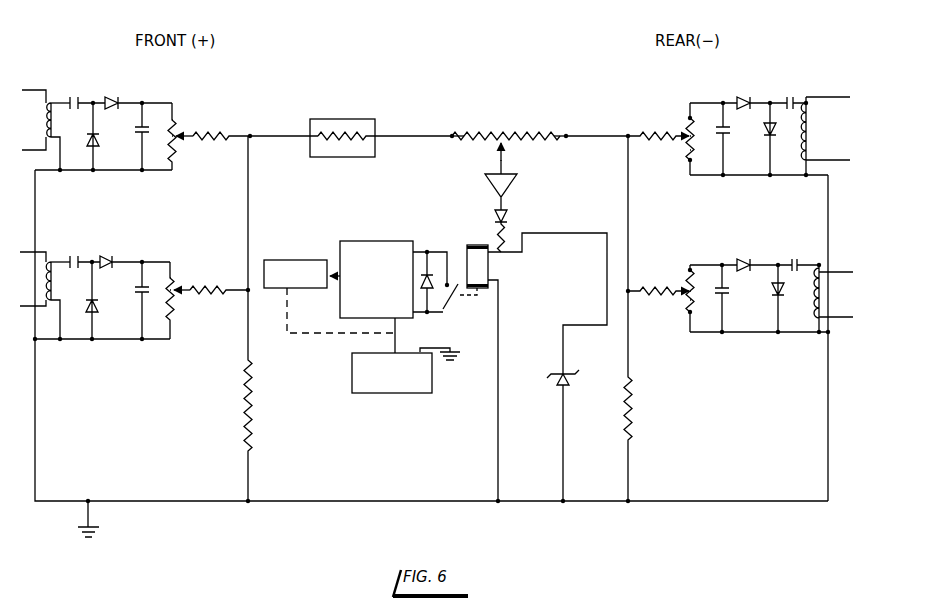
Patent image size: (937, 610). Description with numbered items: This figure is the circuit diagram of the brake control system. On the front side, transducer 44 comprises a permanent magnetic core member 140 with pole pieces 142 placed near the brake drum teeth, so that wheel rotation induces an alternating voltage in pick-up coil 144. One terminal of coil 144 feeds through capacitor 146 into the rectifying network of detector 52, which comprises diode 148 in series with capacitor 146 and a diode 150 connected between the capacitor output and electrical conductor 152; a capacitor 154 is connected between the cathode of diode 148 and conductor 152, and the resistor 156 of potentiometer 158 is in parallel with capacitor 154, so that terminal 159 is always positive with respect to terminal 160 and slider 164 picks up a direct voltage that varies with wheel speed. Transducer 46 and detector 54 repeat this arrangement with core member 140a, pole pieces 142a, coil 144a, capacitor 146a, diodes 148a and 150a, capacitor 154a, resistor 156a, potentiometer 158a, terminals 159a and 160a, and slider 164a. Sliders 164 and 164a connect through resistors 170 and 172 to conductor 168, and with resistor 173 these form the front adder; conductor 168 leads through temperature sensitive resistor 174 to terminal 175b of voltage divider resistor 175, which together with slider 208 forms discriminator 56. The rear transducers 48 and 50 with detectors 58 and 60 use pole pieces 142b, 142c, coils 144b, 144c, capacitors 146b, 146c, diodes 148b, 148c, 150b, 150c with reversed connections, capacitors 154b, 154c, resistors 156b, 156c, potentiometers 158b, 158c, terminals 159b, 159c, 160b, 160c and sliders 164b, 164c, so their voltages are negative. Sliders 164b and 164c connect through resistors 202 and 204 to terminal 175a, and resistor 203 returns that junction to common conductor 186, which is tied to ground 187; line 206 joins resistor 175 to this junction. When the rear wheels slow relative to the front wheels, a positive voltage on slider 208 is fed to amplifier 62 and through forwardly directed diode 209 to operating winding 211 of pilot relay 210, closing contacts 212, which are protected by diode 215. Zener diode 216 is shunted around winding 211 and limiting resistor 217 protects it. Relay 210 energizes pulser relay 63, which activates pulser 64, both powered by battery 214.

The transducer 44 is at (55, 260).
The transducer 46 is at (55, 100).
The transducer 48 is at (817, 260).
The transducer 50 is at (809, 100).
The detector 52 is at (117, 341).
The detector 54 is at (118, 172).
The discriminator 56 is at (506, 132).
The detector 58 is at (776, 335).
The detector 60 is at (757, 178).
The amplifier 62 is at (508, 180).
The pulser relay 63 is at (388, 241).
The pulser 64 is at (272, 289).
The permanent magnetic core member 140 is at (46, 252).
The permanent magnetic core member 140a is at (46, 90).
The pole pieces 142 is at (31, 279).
The pole pieces 142a is at (33, 120).
The pole pieces 142b is at (841, 294).
The pole pieces 142c is at (831, 128).
The pick-up coil 144 is at (52, 288).
The pick-up coil 144a is at (52, 116).
The pick-up coil 144b is at (817, 305).
The pick-up coil 144c is at (803, 138).
The capacitor 146 is at (76, 256).
The capacitor 146a is at (76, 96).
The capacitor 146b is at (795, 259).
The capacitor 146c is at (790, 97).
The diode 148 is at (106, 256).
The diode 148a is at (113, 97).
The diode 148b is at (746, 259).
The diode 148c is at (741, 99).
The diode 150 is at (107, 300).
The diode 150a is at (112, 136).
The diode 150b is at (777, 290).
The diode 150c is at (770, 118).
The electrical conductor 152 is at (74, 171).
The capacitor 154 is at (142, 300).
The capacitor 154a is at (142, 138).
The capacitor 154b is at (725, 301).
The capacitor 154c is at (724, 140).
The resistor 156 is at (189, 300).
The resistor 156a is at (187, 128).
The resistor 156b is at (693, 300).
The resistor 156c is at (686, 142).
The potentiometer 158 is at (175, 287).
The potentiometer 158a is at (176, 132).
The potentiometer 158b is at (686, 301).
The potentiometer 158c is at (686, 156).
The terminal 159 is at (170, 278).
The terminal 159a is at (171, 120).
The terminal 159b is at (741, 177).
The terminal 159c is at (689, 117).
The terminal 160 is at (171, 312).
The terminal 160a is at (173, 157).
The terminal 160b is at (689, 316).
The terminal 160c is at (690, 165).
The slider 164 is at (189, 286).
The slider 164a is at (193, 132).
The slider 164b is at (688, 284).
The slider 164c is at (688, 126).
The conductor 168 is at (254, 137).
The resistor 170 is at (201, 140).
The resistor 172 is at (211, 294).
The resistor 173 is at (244, 398).
The temperature sensitive resistor 174 is at (336, 121).
The voltage divider resistor 175 is at (498, 132).
The terminal 175a is at (576, 133).
The terminal 175b is at (453, 132).
The common conductor 186 is at (550, 504).
The ground 187 is at (91, 515).
The resistor 202 is at (653, 133).
The resistor 203 is at (632, 414).
The resistor 204 is at (671, 296).
The line 206 is at (604, 138).
The slider 208 is at (497, 164).
The diode 209 is at (504, 220).
The pilot relay 210 is at (465, 242).
The operating winding 211 is at (490, 268).
The contacts 212 is at (449, 302).
The battery 214 is at (380, 394).
The diode 215 is at (429, 292).
The Zener diode 216 is at (553, 385).
The limiting resistor 217 is at (508, 240).